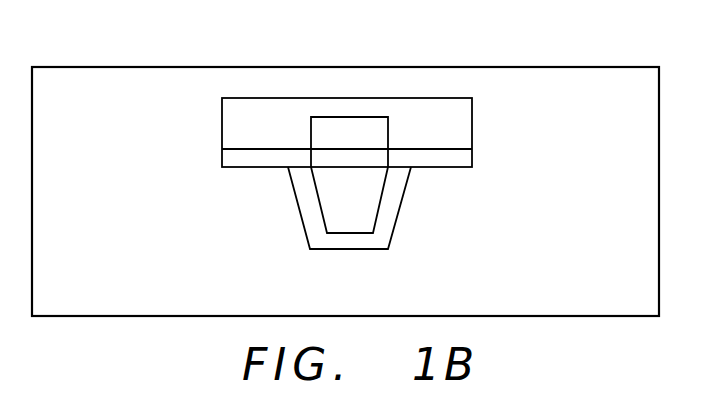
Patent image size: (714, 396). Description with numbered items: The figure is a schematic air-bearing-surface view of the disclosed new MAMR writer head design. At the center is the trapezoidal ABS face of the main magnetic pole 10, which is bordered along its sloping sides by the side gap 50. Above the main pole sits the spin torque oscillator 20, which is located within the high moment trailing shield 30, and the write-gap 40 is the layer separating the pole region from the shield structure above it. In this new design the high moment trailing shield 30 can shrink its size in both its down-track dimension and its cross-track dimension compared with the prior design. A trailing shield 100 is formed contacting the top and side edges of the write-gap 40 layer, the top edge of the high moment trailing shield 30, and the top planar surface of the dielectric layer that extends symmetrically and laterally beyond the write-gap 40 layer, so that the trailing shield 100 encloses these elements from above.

The trailing shield 100 is at (236, 119).
The main magnetic pole 10 is at (355, 199).
The spin torque oscillator 20 is at (350, 158).
The high moment trailing shield 30 is at (378, 130).
The write-gap 40 is at (460, 156).
The side gap 50 is at (308, 206).